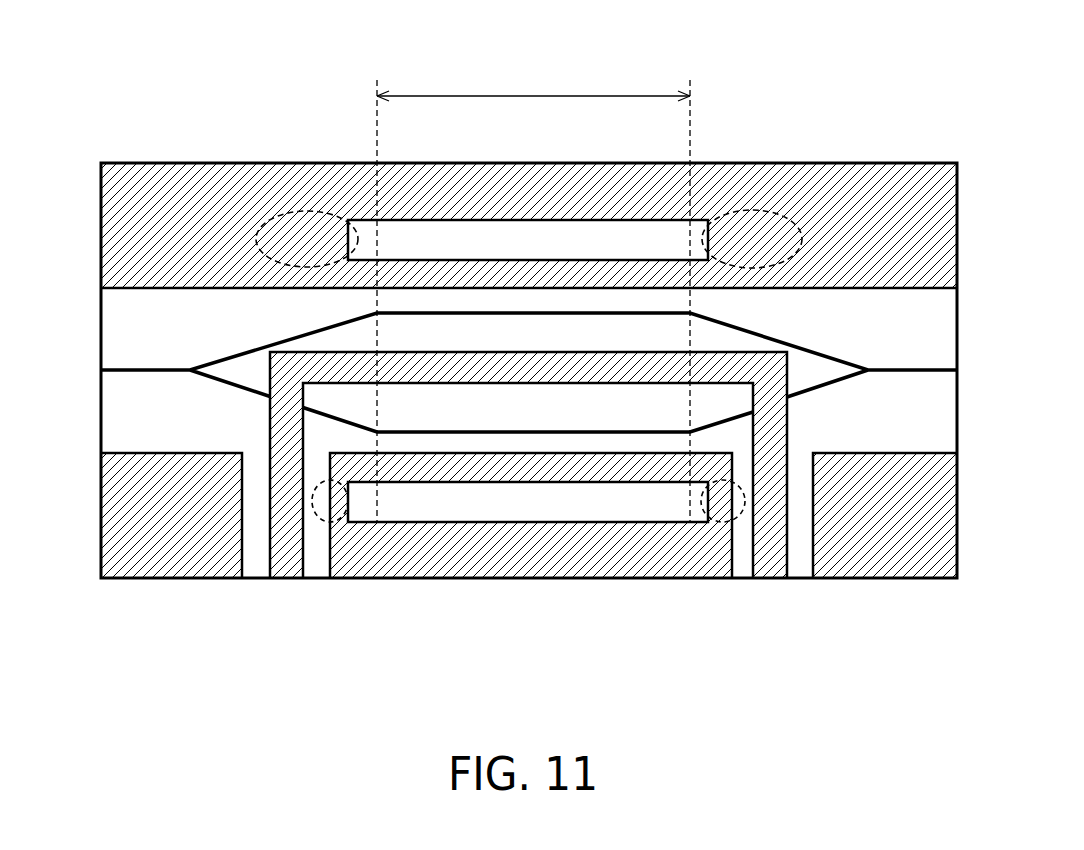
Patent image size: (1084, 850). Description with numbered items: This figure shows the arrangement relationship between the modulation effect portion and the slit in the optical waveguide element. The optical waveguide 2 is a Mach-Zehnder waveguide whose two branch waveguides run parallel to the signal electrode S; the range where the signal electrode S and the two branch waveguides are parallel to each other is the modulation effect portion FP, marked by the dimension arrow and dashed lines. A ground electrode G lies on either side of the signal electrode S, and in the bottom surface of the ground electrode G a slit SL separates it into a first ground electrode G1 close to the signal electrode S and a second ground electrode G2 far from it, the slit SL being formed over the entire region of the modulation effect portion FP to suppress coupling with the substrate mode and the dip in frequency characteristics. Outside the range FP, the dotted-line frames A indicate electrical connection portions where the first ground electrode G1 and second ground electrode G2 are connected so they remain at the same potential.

The optical waveguide 2 is at (135, 372).
The ground electrode G is at (868, 548).
The first ground electrode G1 is at (398, 278).
The second ground electrode G2 is at (636, 200).
The signal electrode S is at (440, 372).
The slit SL is at (582, 242).
The electrical connection portion A is at (787, 258).
The modulation effect portion FP is at (533, 296).